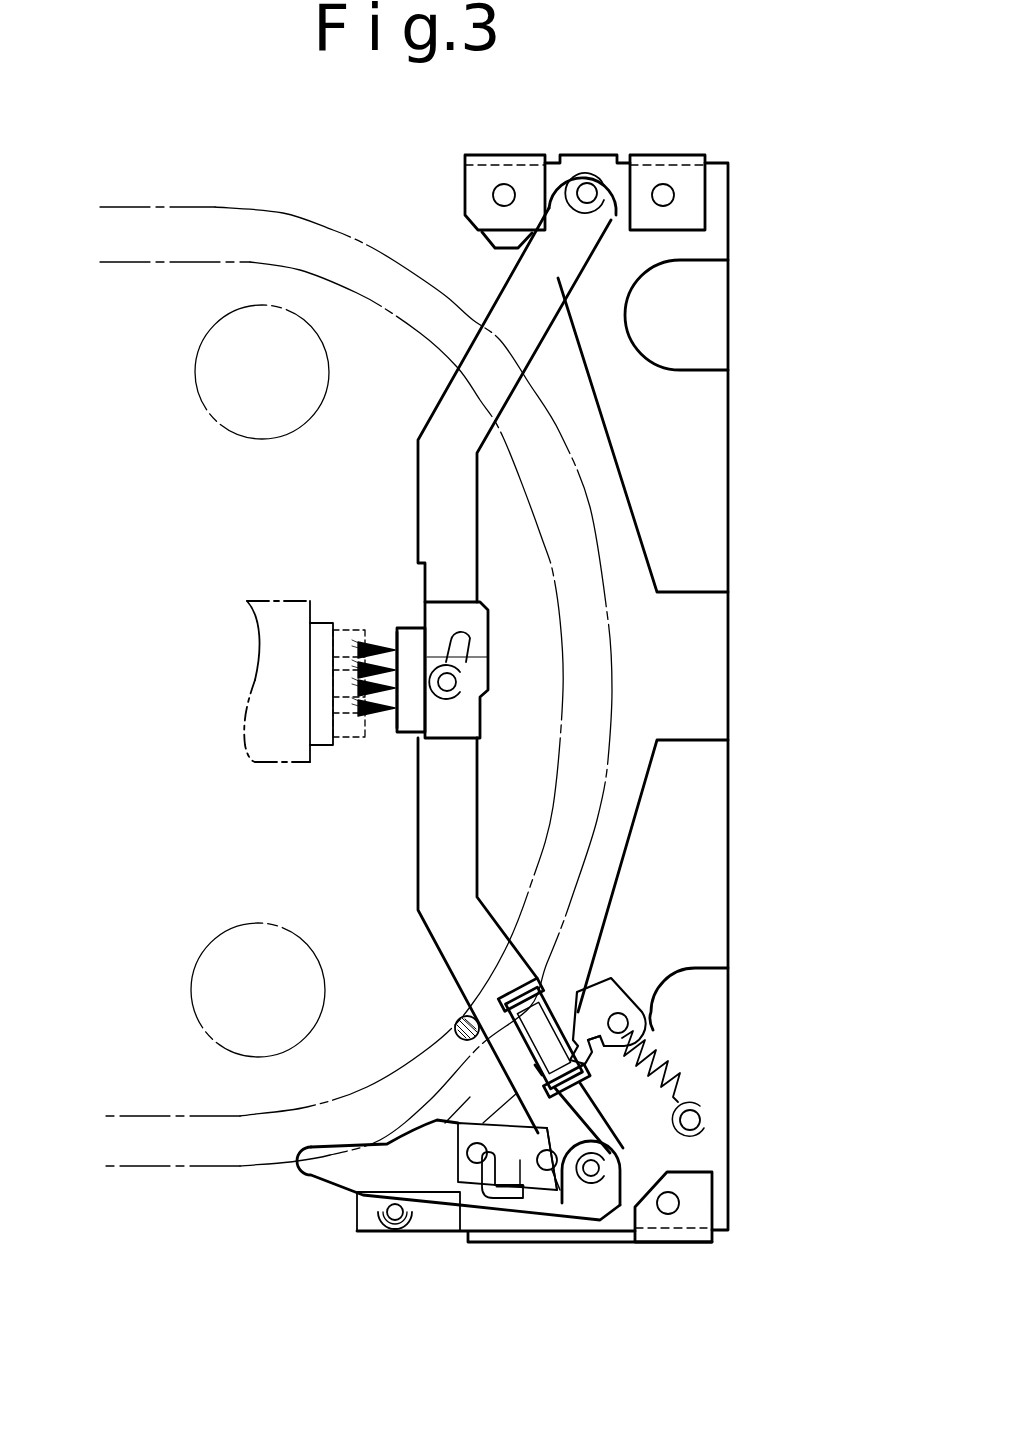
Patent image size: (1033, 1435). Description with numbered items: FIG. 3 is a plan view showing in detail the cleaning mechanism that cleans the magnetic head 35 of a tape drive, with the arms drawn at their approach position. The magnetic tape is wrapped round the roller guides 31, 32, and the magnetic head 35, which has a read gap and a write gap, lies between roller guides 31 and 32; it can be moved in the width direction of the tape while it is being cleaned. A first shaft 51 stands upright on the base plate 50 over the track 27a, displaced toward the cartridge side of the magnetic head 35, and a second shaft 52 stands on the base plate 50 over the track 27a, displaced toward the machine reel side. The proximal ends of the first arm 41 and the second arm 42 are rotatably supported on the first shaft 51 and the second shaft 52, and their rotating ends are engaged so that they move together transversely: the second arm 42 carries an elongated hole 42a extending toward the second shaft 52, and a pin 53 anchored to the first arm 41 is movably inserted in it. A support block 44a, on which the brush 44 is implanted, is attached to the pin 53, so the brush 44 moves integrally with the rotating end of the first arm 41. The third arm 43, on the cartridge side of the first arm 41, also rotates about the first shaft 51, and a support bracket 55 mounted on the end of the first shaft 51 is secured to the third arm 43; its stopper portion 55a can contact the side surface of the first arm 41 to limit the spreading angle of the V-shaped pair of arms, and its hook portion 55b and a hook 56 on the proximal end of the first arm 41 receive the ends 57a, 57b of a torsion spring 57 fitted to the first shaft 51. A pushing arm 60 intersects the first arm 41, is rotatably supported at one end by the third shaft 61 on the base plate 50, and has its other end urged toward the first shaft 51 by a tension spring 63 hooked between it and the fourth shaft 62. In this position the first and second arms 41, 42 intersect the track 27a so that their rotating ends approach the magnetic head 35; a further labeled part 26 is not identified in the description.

The slider block 26 is at (510, 963).
The track 27a is at (148, 1170).
The roller guide 31 is at (258, 1058).
The roller guide 32 is at (287, 307).
The magnetic head 35 is at (357, 627).
The first arm 41 is at (465, 775).
The second arm 42 is at (558, 278).
The elongated hole 42a is at (466, 648).
The third arm 43 is at (333, 1178).
The brush 44 is at (445, 603).
The support block 44a is at (397, 663).
The base plate 50 is at (700, 414).
The first shaft 51 is at (590, 1170).
The second shaft 52 is at (585, 193).
The pin 53 is at (452, 680).
The support bracket 55 is at (637, 1187).
The stopper portion 55a is at (590, 1143).
The hook portion 55b is at (488, 1187).
The hook 56 is at (588, 1064).
The torsion spring 57 is at (620, 1150).
The end of torsion spring 57a is at (527, 1187).
The end of torsion spring 57b is at (558, 1187).
The pushing arm 60 is at (665, 1015).
The third shaft 61 is at (395, 1230).
The fourth shaft 62 is at (700, 1117).
The tension spring 63 is at (665, 1040).